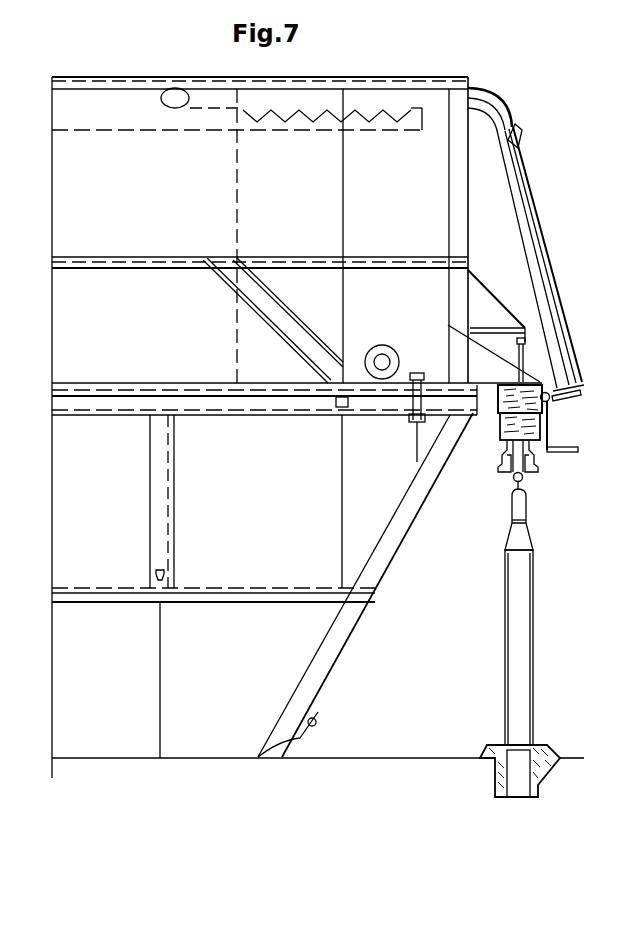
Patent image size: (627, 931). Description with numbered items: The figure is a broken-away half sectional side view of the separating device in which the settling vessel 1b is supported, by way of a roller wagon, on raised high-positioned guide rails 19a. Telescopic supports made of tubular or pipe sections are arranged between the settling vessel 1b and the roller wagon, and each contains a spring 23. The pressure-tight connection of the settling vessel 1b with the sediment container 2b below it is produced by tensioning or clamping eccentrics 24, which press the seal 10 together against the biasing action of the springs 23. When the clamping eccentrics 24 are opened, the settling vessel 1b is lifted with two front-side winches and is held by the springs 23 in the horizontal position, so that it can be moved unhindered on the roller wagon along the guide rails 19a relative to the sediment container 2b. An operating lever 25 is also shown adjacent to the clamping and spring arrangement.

The seal 10 is at (58, 392).
The settling vessel 1b is at (425, 222).
The tensioning or clamping eccentrics 24 is at (408, 402).
The spring 23 is at (505, 420).
The lever 25 is at (567, 455).
The guide rails 19a is at (513, 505).
The sediment container 2b is at (377, 567).